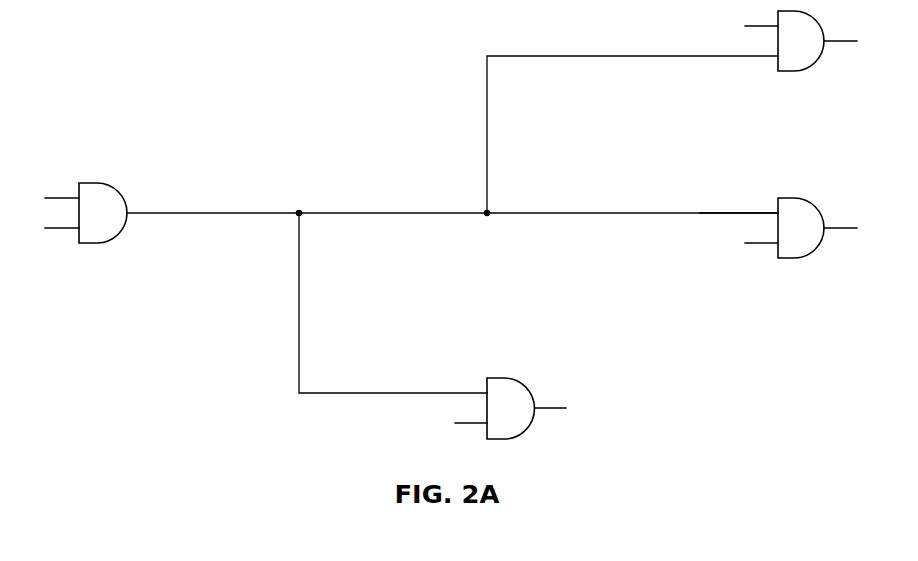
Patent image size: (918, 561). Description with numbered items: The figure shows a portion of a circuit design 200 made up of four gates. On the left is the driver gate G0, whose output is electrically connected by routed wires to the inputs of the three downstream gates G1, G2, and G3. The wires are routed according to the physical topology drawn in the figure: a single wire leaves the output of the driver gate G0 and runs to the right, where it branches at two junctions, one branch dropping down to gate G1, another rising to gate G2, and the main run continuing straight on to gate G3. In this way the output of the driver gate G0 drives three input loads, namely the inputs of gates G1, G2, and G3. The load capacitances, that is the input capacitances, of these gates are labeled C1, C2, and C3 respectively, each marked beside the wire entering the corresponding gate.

The portion of circuit design 200 is at (304, 90).
The driver gate G0 is at (86, 213).
The gate G1 is at (510, 408).
The gate G2 is at (801, 41).
The gate G3 is at (801, 228).
The load capacitance C1 is at (393, 303).
The load capacitance C2 is at (632, 134).
The load capacitance C3 is at (739, 201).